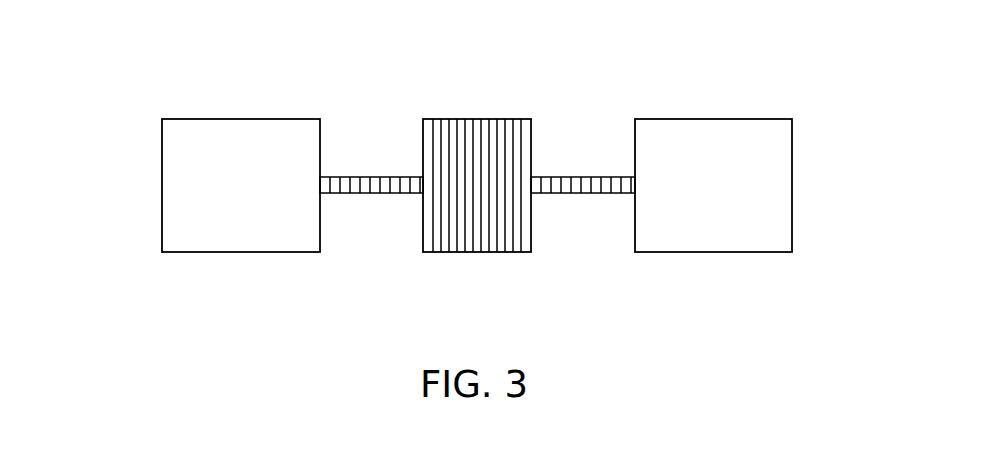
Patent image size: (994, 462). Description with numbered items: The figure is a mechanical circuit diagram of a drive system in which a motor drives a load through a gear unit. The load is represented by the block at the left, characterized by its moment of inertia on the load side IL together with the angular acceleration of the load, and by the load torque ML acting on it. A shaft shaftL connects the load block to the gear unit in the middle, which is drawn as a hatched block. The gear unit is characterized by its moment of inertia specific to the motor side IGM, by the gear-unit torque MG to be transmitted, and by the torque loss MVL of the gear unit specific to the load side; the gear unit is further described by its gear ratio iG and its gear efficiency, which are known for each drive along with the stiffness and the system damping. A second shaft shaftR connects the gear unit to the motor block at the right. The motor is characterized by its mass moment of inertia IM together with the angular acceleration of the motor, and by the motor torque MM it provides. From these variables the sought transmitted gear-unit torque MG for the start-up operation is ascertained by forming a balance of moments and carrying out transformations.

The moment of inertia on the load side IL is at (273, 295).
The load torque ML is at (122, 183).
The load-side shaft shaftL is at (371, 185).
The moment of inertia of the gear unit specific to the motor side IGM is at (512, 295).
The gear-unit torque MG is at (513, 75).
The gear ratio iG is at (520, 119).
The torque loss of the gear unit MVL is at (512, 340).
The motor-side shaft shaftR is at (583, 185).
The mass moment of inertia of the motor IM is at (748, 297).
The motor torque MM is at (898, 185).